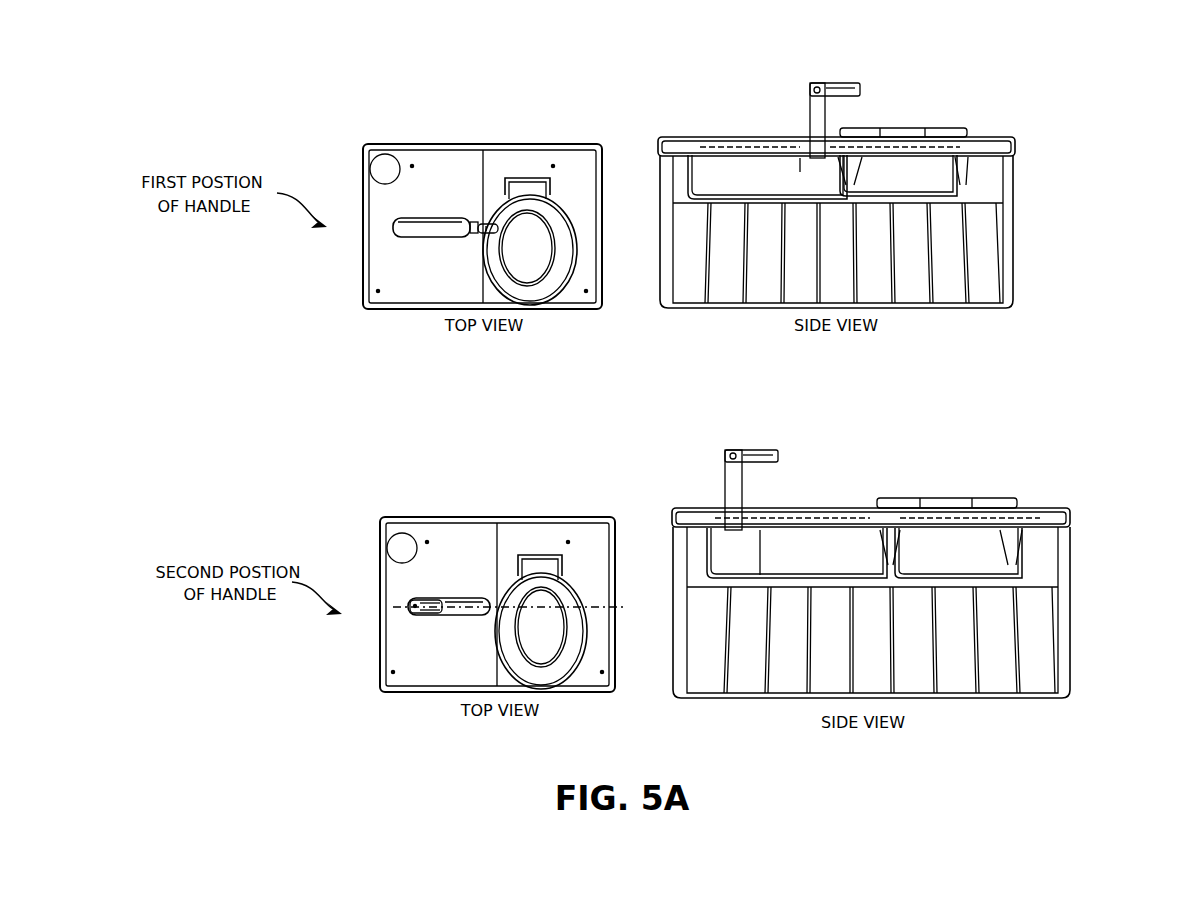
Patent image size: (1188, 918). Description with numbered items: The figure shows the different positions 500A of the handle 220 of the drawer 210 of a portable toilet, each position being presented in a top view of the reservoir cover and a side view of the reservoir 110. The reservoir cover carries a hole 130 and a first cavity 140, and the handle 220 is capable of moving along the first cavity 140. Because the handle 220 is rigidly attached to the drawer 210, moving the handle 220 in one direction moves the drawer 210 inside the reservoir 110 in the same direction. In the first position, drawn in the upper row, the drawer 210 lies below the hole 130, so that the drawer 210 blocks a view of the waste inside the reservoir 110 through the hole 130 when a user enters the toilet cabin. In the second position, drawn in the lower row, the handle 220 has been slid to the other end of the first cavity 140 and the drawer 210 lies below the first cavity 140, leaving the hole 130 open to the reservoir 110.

The different positions of the handle 500A is at (358, 102).
The reservoir 110 is at (982, 262).
The hole 130 is at (530, 258).
The first cavity 140 is at (418, 230).
The drawer 210 is at (902, 188).
The handle 220 is at (484, 232).